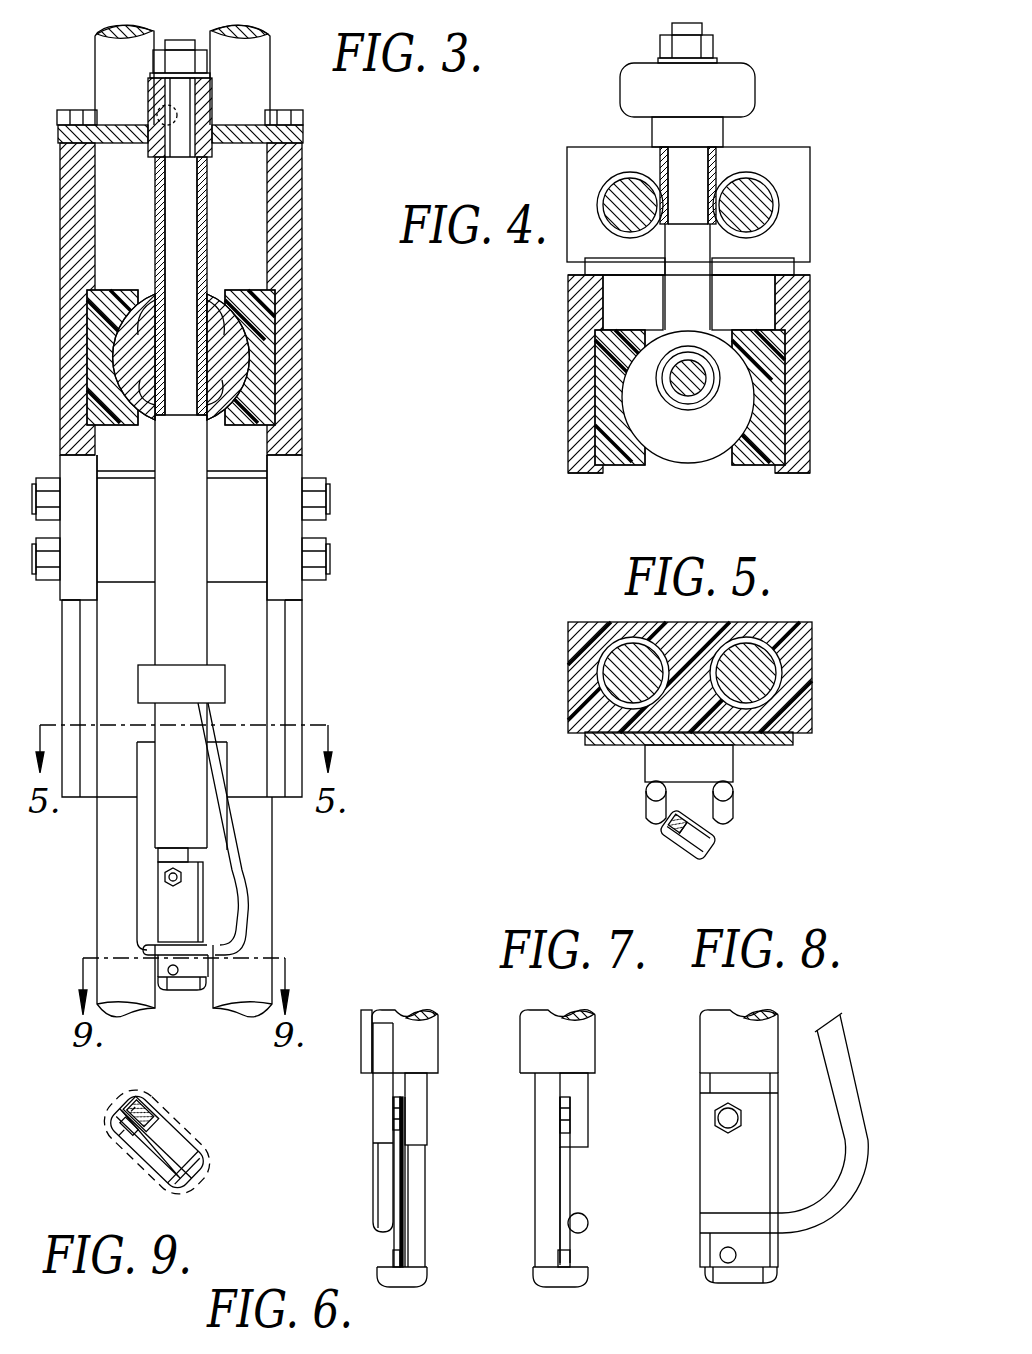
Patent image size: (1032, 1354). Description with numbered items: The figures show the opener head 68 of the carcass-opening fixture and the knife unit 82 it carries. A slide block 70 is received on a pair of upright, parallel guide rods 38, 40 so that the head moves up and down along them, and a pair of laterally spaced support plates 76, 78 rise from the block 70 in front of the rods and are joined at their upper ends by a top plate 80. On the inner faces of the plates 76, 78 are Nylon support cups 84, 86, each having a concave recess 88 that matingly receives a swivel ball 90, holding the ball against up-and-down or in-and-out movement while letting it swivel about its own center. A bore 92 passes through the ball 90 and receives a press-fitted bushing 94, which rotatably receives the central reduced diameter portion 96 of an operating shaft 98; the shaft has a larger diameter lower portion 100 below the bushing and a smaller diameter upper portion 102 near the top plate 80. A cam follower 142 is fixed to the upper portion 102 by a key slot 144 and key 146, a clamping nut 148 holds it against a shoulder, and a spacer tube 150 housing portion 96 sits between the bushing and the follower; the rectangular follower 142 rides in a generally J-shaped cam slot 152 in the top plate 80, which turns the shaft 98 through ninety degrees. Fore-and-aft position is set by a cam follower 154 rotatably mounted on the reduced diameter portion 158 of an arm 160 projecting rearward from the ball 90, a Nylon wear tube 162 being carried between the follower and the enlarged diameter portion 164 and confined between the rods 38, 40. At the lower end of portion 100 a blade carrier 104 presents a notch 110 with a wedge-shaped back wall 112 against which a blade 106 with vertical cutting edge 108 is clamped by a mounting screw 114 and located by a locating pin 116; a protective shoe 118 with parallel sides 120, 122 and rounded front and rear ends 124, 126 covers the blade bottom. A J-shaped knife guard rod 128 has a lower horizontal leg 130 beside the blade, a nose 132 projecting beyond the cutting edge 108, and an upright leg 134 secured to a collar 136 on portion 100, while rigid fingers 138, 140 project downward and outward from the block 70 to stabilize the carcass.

In FIG. 3, the guide rod 38 is at (100, 50).
In FIG. 4, the guide rod 38 is at (618, 185).
In FIG. 5, the guide rod 38 is at (612, 673).
In FIG. 3, the guide rod 40 is at (264, 44).
In FIG. 4, the guide rod 40 is at (760, 190).
In FIG. 5, the guide rod 40 is at (770, 675).
In FIG. 3, the opener head 68 is at (312, 175).
In FIG. 4, the opener head 68 is at (566, 300).
In FIG. 3, the slide block 70 is at (95, 690).
In FIG. 4, the slide block 70 is at (578, 185).
In FIG. 5, the slide block 70 is at (582, 630).
In FIG. 3, the support plate 76 is at (80, 250).
In FIG. 4, the support plate 76 is at (575, 345).
In FIG. 3, the support plate 78 is at (290, 222).
In FIG. 4, the support plate 78 is at (800, 305).
In FIG. 3, the top plate 80 is at (70, 133).
In FIG. 3, the knife unit 82 is at (218, 508).
In FIG. 3, the support cup 84 is at (100, 372).
In FIG. 4, the support cup 84 is at (625, 462).
In FIG. 3, the support cup 86 is at (258, 310).
In FIG. 4, the support cup 86 is at (762, 462).
In FIG. 3, the concave recess 88 is at (128, 322).
In FIG. 3, the swivel ball 90 is at (235, 350).
In FIG. 4, the swivel ball 90 is at (692, 460).
In FIG. 3, the bore 92 is at (200, 325).
In FIG. 3, the bushing 94 is at (170, 400).
In FIG. 4, the bushing 94 is at (673, 395).
In FIG. 3, the central reduced diameter portion 96 is at (183, 223).
In FIG. 4, the central reduced diameter portion 96 is at (700, 385).
In FIG. 3, the operating shaft 98 is at (212, 640).
In FIG. 6, the operating shaft 98 is at (436, 1010).
In FIG. 7, the operating shaft 98 is at (522, 1042).
In FIG. 8, the operating shaft 98 is at (697, 1025).
In FIG. 3, the lower portion 100 is at (165, 602).
In FIG. 6, the lower portion 100 is at (410, 1012).
In FIG. 7, the lower portion 100 is at (572, 1012).
In FIG. 8, the lower portion 100 is at (760, 1012).
In FIG. 3, the upper portion 102 is at (190, 100).
In FIG. 6, the blade carrier 104 is at (424, 1097).
In FIG. 3, the blade 106 is at (160, 916).
In FIG. 5, the blade 106 is at (718, 845).
In FIG. 6, the blade 106 is at (408, 1212).
In FIG. 7, the blade 106 is at (568, 1182).
In FIG. 8, the blade 106 is at (700, 1148).
In FIG. 9, the blade 106 is at (157, 1141).
In FIG. 3, the cutting edge 108 is at (218, 950).
In FIG. 8, the cutting edge 108 is at (780, 1180).
In FIG. 9, the cutting edge 108 is at (151, 1145).
In FIG. 6, the notch 110 is at (378, 1244).
In FIG. 7, the notch 110 is at (573, 1243).
In FIG. 5, the back wall 112 is at (695, 820).
In FIG. 6, the back wall 112 is at (420, 1170).
In FIG. 7, the back wall 112 is at (540, 1175).
In FIG. 9, the back wall 112 is at (140, 1113).
In FIG. 3, the mounting screw 114 is at (165, 877).
In FIG. 7, the mounting screw 114 is at (572, 1112).
In FIG. 8, the mounting screw 114 is at (740, 1120).
In FIG. 3, the locating pin 116 is at (172, 978).
In FIG. 6, the locating pin 116 is at (395, 1262).
In FIG. 7, the locating pin 116 is at (578, 1267).
In FIG. 8, the locating pin 116 is at (736, 1256).
In FIG. 9, the locating pin 116 is at (129, 1126).
In FIG. 3, the protective shoe 118 is at (188, 992).
In FIG. 5, the protective shoe 118 is at (686, 860).
In FIG. 6, the protective shoe 118 is at (420, 1292).
In FIG. 7, the protective shoe 118 is at (583, 1290).
In FIG. 8, the protective shoe 118 is at (768, 1285).
In FIG. 9, the protective shoe 118 is at (183, 1167).
In FIG. 6, the side 120 is at (393, 1274).
In FIG. 7, the side 120 is at (568, 1288).
In FIG. 8, the side 120 is at (738, 1280).
In FIG. 9, the side 120 is at (122, 1133).
In FIG. 6, the side 122 is at (428, 1272).
In FIG. 7, the side 122 is at (535, 1287).
In FIG. 9, the side 122 is at (141, 1113).
In FIG. 6, the front end 124 is at (403, 1289).
In FIG. 8, the front end 124 is at (782, 1274).
In FIG. 9, the front end 124 is at (187, 1171).
In FIG. 8, the rear end 126 is at (705, 1272).
In FIG. 9, the rear end 126 is at (133, 1109).
In FIG. 3, the knife guard rod 128 is at (244, 870).
In FIG. 6, the knife guard rod 128 is at (370, 1110).
In FIG. 7, the knife guard rod 128 is at (590, 1160).
In FIG. 8, the knife guard rod 128 is at (848, 1040).
In FIG. 7, the lower horizontal leg 130 is at (582, 1226).
In FIG. 8, the lower horizontal leg 130 is at (735, 1218).
In FIG. 3, the nose 132 is at (238, 918).
In FIG. 6, the nose 132 is at (378, 1178).
In FIG. 8, the nose 132 is at (838, 1202).
In FIG. 3, the upright leg 134 is at (228, 820).
In FIG. 6, the upright leg 134 is at (372, 1040).
In FIG. 8, the upright leg 134 is at (822, 1034).
In FIG. 3, the collar 136 is at (222, 683).
In FIG. 3, the finger 138 is at (145, 820).
In FIG. 5, the finger 138 is at (646, 808).
In FIG. 3, the finger 140 is at (218, 900).
In FIG. 5, the finger 140 is at (733, 808).
In FIG. 3, the cam follower 142 is at (212, 118).
In FIG. 9, the cam follower 142 is at (156, 1142).
In FIG. 3, the key slot 144 is at (165, 160).
In FIG. 3, the key 146 is at (160, 112).
In FIG. 3, the clamping nut 148 is at (180, 56).
In FIG. 3, the spacer tube 150 is at (155, 268).
In FIG. 3, the cam slot 152 is at (212, 145).
In FIG. 4, the cam follower 154 is at (735, 72).
In FIG. 4, the reduced diameter portion 158 is at (700, 165).
In FIG. 4, the arm 160 is at (715, 248).
In FIG. 4, the wear tube 162 is at (660, 150).
In FIG. 4, the enlarged diameter portion 164 is at (672, 300).